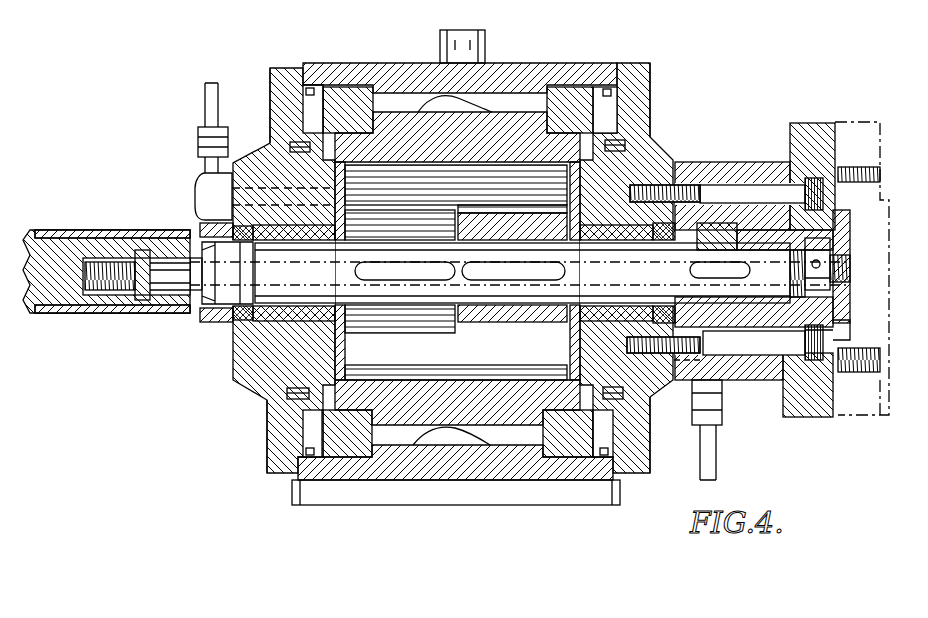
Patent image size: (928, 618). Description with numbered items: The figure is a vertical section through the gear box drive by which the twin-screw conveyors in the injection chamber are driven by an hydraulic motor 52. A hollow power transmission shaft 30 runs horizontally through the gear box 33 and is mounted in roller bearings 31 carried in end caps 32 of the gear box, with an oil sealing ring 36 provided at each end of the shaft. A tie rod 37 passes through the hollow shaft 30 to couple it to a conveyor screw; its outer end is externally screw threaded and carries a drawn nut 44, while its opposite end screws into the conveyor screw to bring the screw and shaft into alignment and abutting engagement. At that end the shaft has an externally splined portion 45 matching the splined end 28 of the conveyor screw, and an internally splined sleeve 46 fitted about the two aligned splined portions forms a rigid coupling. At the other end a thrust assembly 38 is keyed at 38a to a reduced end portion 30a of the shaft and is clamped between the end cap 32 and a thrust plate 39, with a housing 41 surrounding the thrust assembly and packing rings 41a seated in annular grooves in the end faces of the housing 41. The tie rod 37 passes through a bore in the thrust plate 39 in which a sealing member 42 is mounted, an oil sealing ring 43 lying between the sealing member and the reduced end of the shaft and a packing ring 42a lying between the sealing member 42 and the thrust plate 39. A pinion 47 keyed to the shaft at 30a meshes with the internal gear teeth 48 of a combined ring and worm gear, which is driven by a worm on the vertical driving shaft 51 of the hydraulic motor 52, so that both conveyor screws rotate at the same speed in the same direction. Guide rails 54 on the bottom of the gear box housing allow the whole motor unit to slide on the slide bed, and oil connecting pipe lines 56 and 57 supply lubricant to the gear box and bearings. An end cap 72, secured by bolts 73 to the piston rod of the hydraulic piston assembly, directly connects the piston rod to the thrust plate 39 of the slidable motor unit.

The splined end 28 is at (112, 242).
The power transmission shaft 30 is at (398, 305).
The reduced end portion 30a is at (430, 290).
The roller bearings 31 is at (632, 226).
The end caps 32 is at (630, 78).
The gear box 33 is at (350, 70).
The oil sealing ring 36 is at (662, 224).
The tie rod 37 is at (118, 290).
The thrust assembly 38 is at (692, 356).
The key 38a is at (738, 355).
The thrust plate 39 is at (812, 130).
The housing 41 is at (708, 172).
The packing rings 41a is at (727, 225).
The sealing member 42 is at (845, 220).
The packing ring 42a is at (850, 330).
The oil sealing ring 43 is at (772, 185).
The drawn nut 44 is at (822, 262).
The externally splined portion 45 is at (175, 292).
The internally splined sleeve 46 is at (147, 233).
The pinion 47 is at (372, 318).
The internal gear teeth 48 is at (300, 143).
The vertical driving shaft 51 is at (487, 40).
The hydraulic motor 52 is at (450, 102).
The guide rails 54 is at (384, 498).
The oil connecting pipe line 56 is at (220, 95).
The oil connecting pipe line 57 is at (700, 434).
The end cap 72 is at (870, 123).
The bolts 73 is at (852, 168).